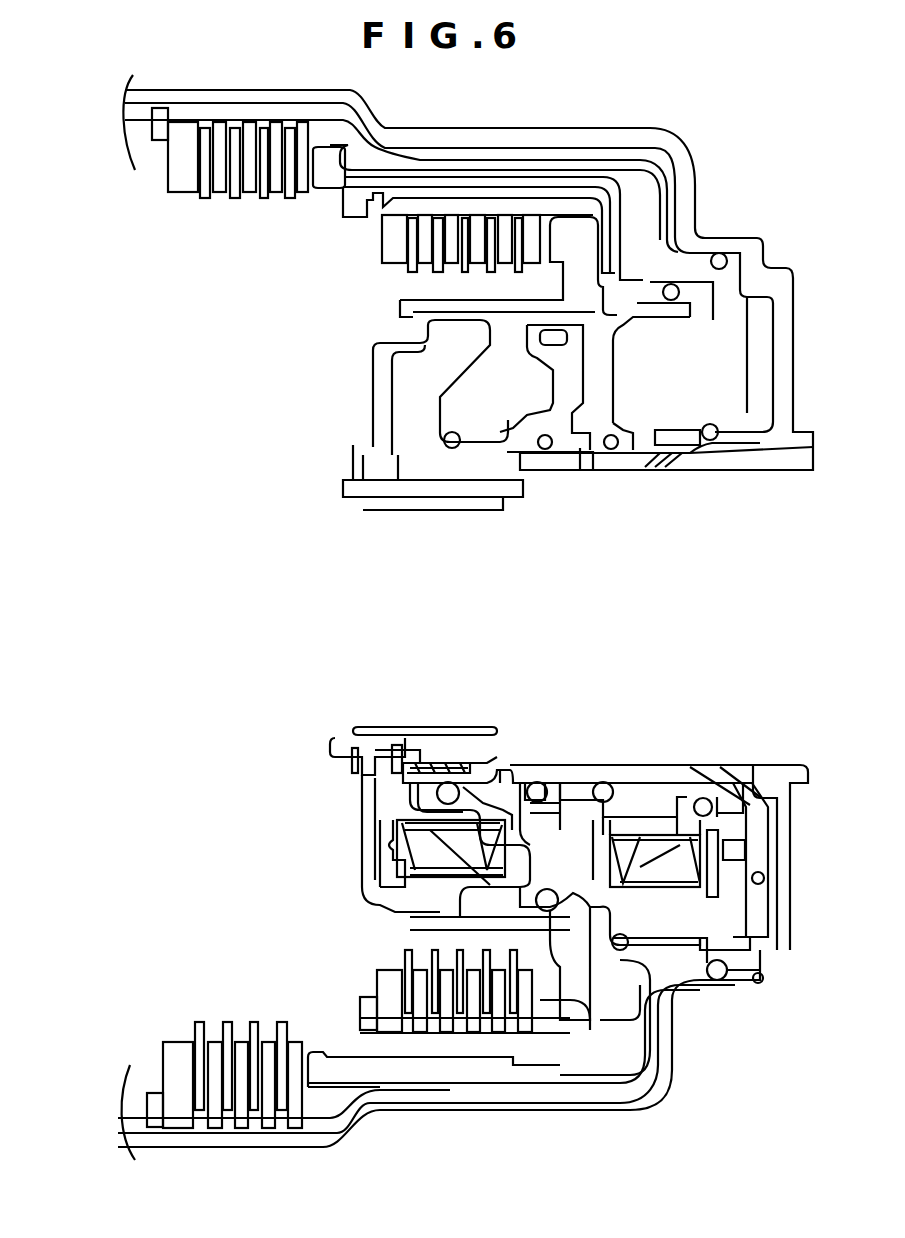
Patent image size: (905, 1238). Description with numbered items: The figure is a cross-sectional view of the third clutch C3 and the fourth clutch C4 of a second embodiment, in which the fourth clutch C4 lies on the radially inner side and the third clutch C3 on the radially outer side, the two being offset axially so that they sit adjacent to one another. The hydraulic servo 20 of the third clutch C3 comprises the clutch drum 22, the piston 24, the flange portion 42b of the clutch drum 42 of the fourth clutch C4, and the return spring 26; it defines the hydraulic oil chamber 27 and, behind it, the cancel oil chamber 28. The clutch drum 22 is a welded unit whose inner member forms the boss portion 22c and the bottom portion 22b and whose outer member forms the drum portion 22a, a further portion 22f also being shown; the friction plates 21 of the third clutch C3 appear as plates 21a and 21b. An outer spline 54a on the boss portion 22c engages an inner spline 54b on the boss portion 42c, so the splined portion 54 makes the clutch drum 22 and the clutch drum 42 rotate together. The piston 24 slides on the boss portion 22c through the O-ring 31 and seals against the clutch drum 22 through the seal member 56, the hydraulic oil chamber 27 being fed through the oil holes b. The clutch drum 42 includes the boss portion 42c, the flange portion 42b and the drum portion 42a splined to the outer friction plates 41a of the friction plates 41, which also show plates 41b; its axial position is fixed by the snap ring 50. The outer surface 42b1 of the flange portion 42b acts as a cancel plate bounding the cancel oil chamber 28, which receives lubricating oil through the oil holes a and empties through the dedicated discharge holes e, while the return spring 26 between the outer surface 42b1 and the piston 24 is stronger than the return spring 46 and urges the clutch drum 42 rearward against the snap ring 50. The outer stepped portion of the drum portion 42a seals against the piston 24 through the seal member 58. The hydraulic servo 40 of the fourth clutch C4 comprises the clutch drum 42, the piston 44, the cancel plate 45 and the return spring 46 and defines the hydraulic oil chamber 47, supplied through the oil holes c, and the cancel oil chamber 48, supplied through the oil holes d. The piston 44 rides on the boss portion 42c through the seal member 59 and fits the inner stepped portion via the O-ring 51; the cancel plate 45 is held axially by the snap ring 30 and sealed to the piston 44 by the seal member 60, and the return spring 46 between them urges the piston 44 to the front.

The hydraulic servo 20 is at (760, 330).
The third clutch friction plates 21 is at (248, 980).
The clutch plate 21a is at (182, 1048).
The clutch disk 21b is at (200, 1026).
The clutch drum 22 is at (783, 388).
The drum portion 22a is at (615, 462).
The bottom portion 22b is at (752, 938).
The boss portion 22c is at (358, 727).
The housing stepped portion 22f is at (518, 767).
The piston 24 is at (697, 260).
The return spring 26 is at (690, 767).
The hydraulic oil chamber 27 is at (764, 880).
The cancel oil chamber 28 is at (670, 397).
The snap ring 30 is at (335, 742).
The O-ring 31 is at (703, 800).
The hydraulic servo 40 is at (569, 378).
The fourth clutch friction plates 41 is at (320, 898).
The outer friction plates 41a is at (393, 975).
The clutch disk 41b is at (408, 950).
The clutch drum 42 is at (630, 300).
The drum portion 42a is at (422, 1040).
The flange portion 42b is at (760, 857).
The outer surface 42b1 is at (648, 825).
The boss portion 42c is at (492, 765).
The piston 44 is at (478, 415).
The cancel plate 45 is at (365, 813).
The return spring 46 is at (400, 853).
The hydraulic oil chamber 47 is at (580, 800).
The cancel oil chamber 48 is at (410, 383).
The snap ring 50 is at (395, 750).
The O-ring 51 is at (540, 960).
The splined portion 54 is at (487, 633).
The outer spline 54a is at (445, 765).
The inner spline 54b is at (475, 765).
The seal member 56 is at (763, 978).
The seal member 58 is at (735, 950).
The seal member 59 is at (440, 765).
The seal member 60 is at (385, 893).
The third clutch C3 is at (158, 187).
The fourth clutch C4 is at (353, 264).
The oil holes a is at (670, 458).
The oil holes b is at (735, 767).
The oil holes c is at (583, 467).
The oil holes d is at (500, 765).
The discharge holes e is at (775, 455).